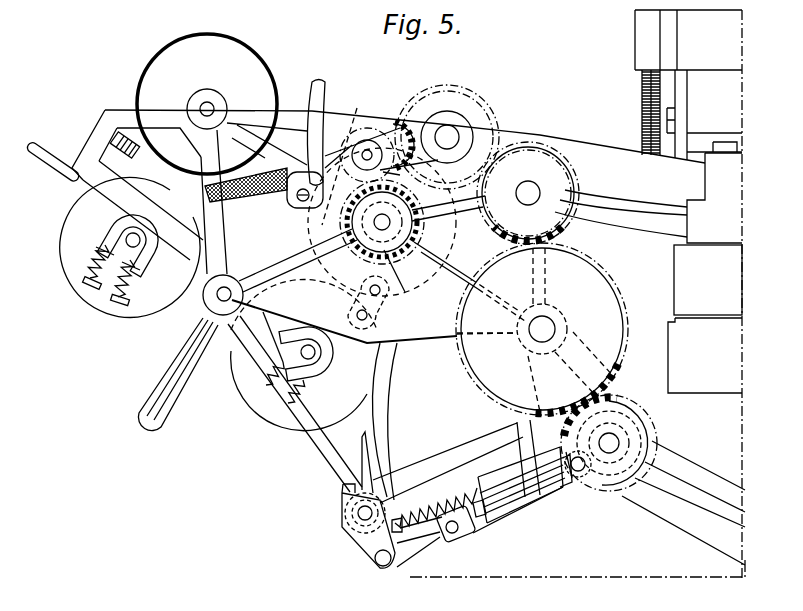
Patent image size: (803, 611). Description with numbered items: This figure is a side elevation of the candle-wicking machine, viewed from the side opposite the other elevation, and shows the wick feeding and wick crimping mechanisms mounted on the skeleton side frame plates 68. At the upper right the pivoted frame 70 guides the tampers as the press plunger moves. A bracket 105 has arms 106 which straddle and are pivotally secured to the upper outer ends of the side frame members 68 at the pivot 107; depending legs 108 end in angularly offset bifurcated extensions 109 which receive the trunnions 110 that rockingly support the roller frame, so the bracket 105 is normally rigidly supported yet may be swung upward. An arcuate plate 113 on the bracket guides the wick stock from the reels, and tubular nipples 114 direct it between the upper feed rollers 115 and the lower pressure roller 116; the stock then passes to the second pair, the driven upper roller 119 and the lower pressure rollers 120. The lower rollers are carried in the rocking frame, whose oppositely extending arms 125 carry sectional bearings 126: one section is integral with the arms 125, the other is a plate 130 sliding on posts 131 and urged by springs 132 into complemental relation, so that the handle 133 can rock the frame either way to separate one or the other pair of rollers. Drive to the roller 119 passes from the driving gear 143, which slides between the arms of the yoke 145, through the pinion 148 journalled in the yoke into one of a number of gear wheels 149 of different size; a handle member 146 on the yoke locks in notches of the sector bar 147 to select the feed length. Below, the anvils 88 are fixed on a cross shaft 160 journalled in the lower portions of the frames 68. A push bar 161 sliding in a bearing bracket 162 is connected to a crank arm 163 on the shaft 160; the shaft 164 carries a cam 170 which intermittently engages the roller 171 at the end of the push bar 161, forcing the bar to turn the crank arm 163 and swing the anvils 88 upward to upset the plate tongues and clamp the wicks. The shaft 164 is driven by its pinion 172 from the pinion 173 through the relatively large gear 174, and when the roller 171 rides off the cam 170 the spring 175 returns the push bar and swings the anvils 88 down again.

The side frame plates 68 is at (583, 147).
The frame 70 is at (640, 90).
The anvils 88 is at (372, 458).
The bracket 105 is at (90, 153).
The arms 106 is at (125, 120).
The pivot 107 is at (212, 106).
The depending legs 108 is at (214, 242).
The bifurcated extensions 109 is at (231, 277).
The trunnions 110 is at (216, 300).
The arcuate plate 113 is at (49, 156).
The tubular nipples 114 is at (116, 128).
The upper feed rollers 115 is at (218, 52).
The lower pressure roller 116 is at (66, 258).
The upper feed roller 119 is at (382, 194).
The lower pressure rollers 120 is at (274, 414).
The arms 125 is at (197, 274).
The bearings 126 is at (120, 237).
The plates 130 is at (128, 252).
The posts 131 is at (90, 290).
The springs 132 is at (133, 286).
The handle 133 is at (181, 406).
The driving gear 143 is at (420, 100).
The yoke 145 is at (390, 125).
The handle member 146 is at (265, 185).
The sector bar 147 is at (333, 208).
The pinion 148 is at (345, 130).
The gear wheels 149 is at (392, 292).
The cross shaft 160 is at (362, 522).
The push bar 161 is at (428, 541).
The bearing bracket 162 is at (578, 497).
The crank arm 163 is at (370, 545).
The shaft 164 is at (612, 444).
The cam 170 is at (566, 440).
The roller 171 is at (590, 493).
The pinion 172 is at (618, 398).
The pinion 173 is at (574, 193).
The large gear 174 is at (596, 290).
The spring 175 is at (447, 495).